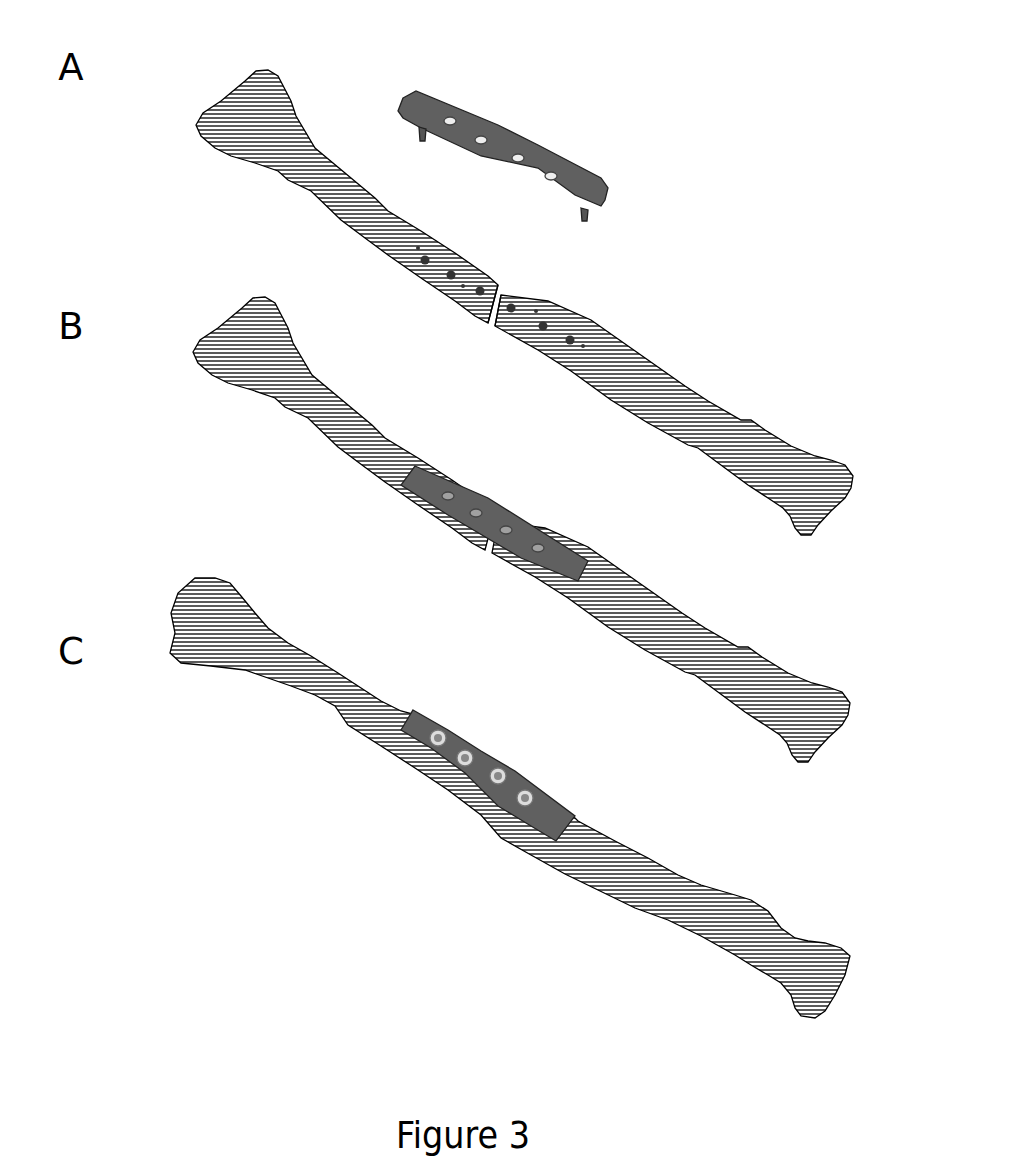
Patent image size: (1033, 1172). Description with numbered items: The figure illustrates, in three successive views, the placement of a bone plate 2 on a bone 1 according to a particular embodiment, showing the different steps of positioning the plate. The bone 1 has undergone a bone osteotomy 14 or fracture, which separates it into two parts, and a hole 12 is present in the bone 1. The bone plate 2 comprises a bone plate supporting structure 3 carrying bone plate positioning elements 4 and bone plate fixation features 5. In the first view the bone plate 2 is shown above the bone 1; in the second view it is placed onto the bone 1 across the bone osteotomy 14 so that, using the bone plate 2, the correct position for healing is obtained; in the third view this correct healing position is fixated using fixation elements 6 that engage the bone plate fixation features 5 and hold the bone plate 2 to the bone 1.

The bone 1 is at (511, 544).
The bone plate 2 is at (535, 428).
The bone plate supporting structure 3 is at (532, 150).
The bone plate positioning elements 4 is at (503, 183).
The bone plate fixation features 5 is at (475, 128).
The fixation elements 6 is at (497, 765).
The hole 12 is at (563, 330).
The bone osteotomy 14 is at (500, 283).